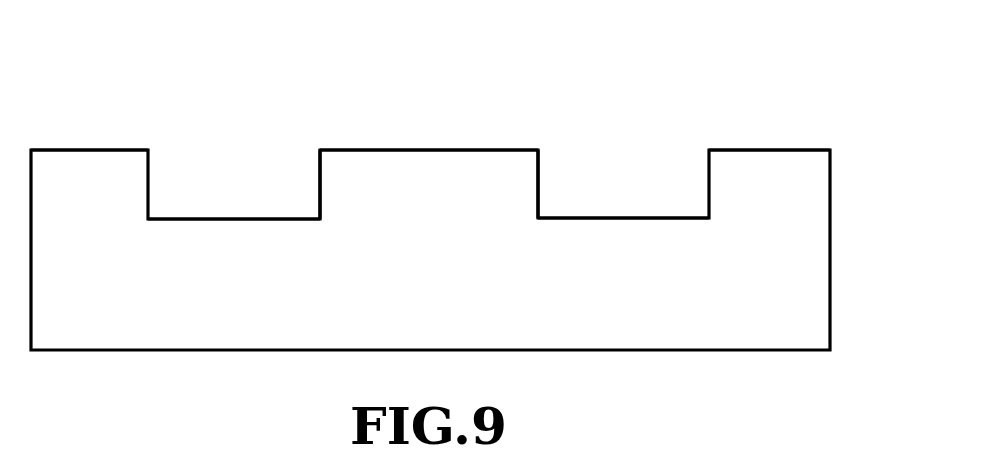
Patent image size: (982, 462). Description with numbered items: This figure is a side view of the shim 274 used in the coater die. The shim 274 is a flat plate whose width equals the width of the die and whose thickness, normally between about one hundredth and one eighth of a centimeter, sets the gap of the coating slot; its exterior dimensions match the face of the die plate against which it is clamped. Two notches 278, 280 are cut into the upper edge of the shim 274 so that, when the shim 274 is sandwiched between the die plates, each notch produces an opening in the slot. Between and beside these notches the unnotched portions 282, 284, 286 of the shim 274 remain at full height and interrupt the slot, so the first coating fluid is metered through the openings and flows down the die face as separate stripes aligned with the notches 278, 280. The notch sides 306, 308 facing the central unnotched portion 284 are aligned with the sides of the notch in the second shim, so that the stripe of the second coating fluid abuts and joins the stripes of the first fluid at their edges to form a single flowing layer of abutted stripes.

The shim 274 is at (838, 184).
The notch 278 is at (230, 218).
The notch 280 is at (628, 218).
The unnotched portion 282 is at (88, 150).
The unnotched portion 284 is at (433, 150).
The unnotched portion 286 is at (762, 150).
The notch side 306 is at (319, 180).
The notch side 308 is at (540, 182).